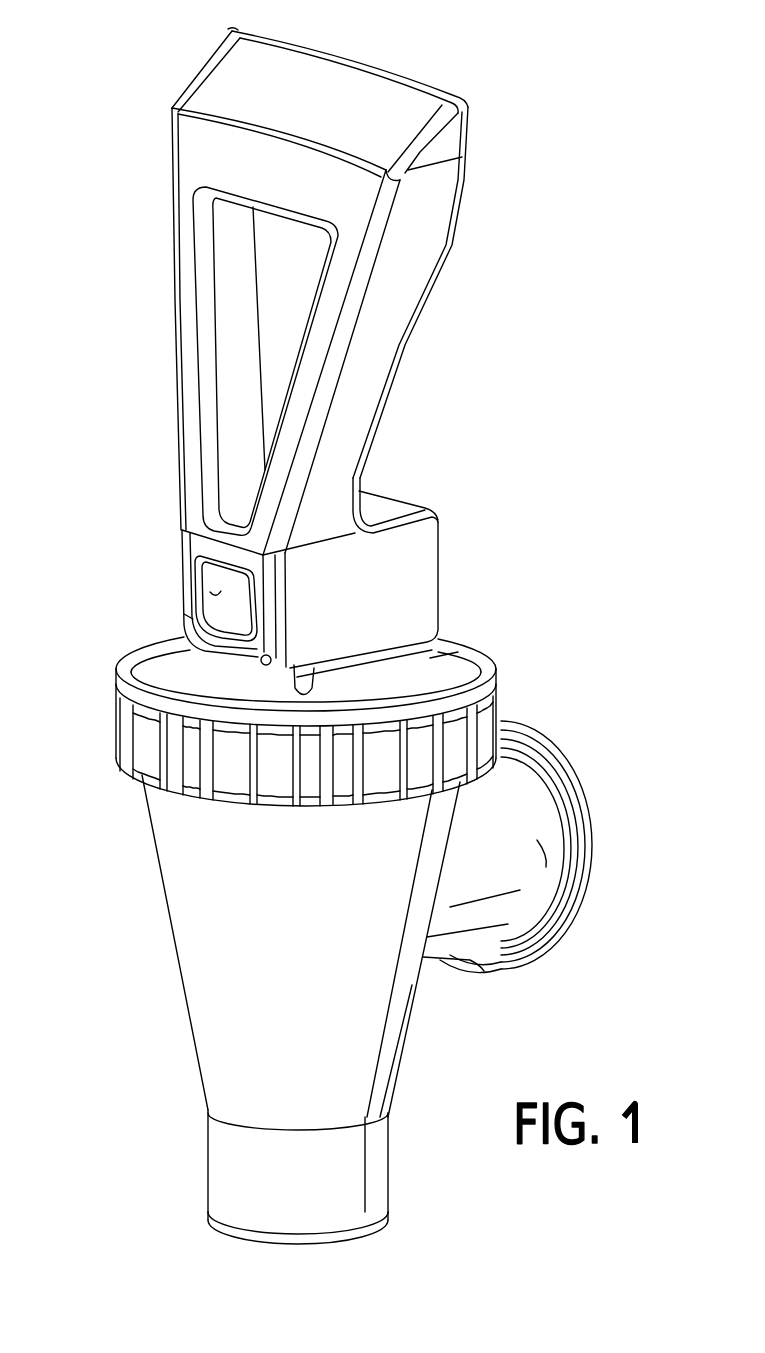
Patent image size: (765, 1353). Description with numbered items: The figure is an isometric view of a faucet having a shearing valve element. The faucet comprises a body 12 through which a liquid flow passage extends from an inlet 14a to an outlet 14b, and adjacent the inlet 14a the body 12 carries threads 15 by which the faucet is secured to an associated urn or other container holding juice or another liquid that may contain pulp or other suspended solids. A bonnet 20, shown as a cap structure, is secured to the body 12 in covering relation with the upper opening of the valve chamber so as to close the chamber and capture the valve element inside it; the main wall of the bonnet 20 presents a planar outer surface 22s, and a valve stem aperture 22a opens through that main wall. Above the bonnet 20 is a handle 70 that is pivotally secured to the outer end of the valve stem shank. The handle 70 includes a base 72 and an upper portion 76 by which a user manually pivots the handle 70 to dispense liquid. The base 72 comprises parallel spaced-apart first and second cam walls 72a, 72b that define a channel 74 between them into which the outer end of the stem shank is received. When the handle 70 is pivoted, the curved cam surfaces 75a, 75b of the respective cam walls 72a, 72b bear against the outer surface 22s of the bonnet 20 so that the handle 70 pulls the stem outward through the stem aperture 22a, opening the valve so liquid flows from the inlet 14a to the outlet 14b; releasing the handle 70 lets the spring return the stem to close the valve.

The body 12 is at (200, 965).
The inlet 14a is at (580, 783).
The outlet 14b is at (365, 1237).
The threads 15 is at (567, 927).
The bonnet 20 is at (140, 650).
The valve stem aperture 22a is at (259, 670).
The planar outer surface 22s is at (444, 660).
The handle 70 is at (302, 361).
The base 72 is at (375, 510).
The first cam wall 72a is at (212, 572).
The second cam wall 72b is at (427, 558).
The channel 74 is at (212, 593).
The curved cam surface 75a is at (186, 617).
The curved cam surface 75b is at (297, 666).
The upper portion 76 is at (402, 270).